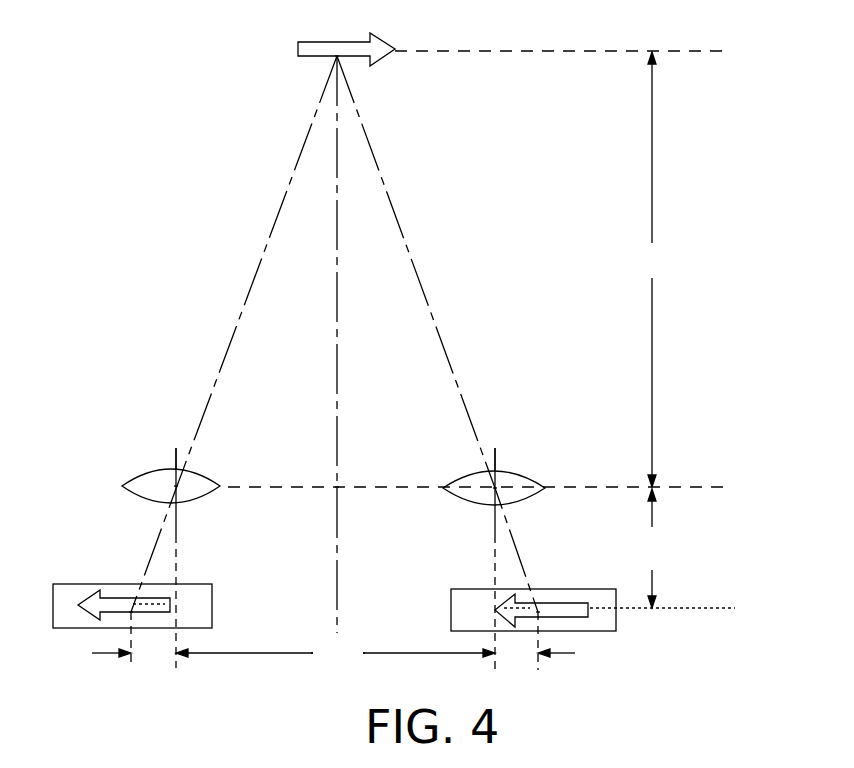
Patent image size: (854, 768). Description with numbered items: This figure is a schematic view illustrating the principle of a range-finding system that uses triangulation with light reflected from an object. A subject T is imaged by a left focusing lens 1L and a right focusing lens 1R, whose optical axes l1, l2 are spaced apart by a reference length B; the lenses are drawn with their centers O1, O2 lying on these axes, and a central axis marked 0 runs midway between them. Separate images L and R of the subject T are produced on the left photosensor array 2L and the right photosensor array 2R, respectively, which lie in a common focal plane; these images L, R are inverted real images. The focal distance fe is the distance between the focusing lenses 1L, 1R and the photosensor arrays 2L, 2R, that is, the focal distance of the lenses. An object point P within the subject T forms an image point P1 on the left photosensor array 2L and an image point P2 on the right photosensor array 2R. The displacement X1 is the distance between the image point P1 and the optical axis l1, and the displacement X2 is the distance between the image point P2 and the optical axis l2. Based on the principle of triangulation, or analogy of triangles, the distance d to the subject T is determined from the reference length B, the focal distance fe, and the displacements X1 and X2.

The subject T is at (317, 43).
The object point P is at (318, 73).
The distance to the subject d is at (652, 269).
The focal distance fe is at (653, 548).
The left focusing lens 1L is at (200, 472).
The right focusing lens 1R is at (520, 476).
The optical axis of left focusing lens l1 is at (171, 448).
The optical axis of right focusing lens l2 is at (503, 448).
The left lens center O1 is at (162, 488).
The right lens center O2 is at (482, 490).
The origin 0 is at (346, 505).
The left photosensor array 2L is at (218, 596).
The right photosensor array 2R is at (588, 640).
The left image L is at (88, 585).
The right image R is at (548, 598).
The left image point P1 is at (118, 610).
The right image point P2 is at (558, 618).
The left image point distance X1 is at (202, 640).
The right image point distance X2 is at (469, 641).
The reference length B is at (338, 656).